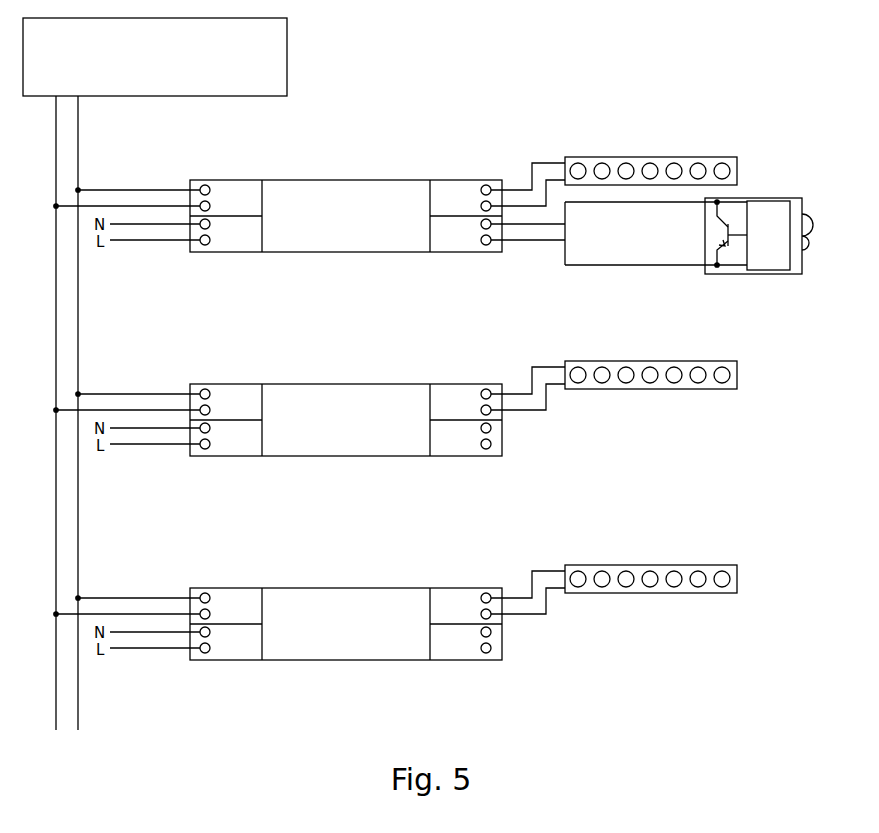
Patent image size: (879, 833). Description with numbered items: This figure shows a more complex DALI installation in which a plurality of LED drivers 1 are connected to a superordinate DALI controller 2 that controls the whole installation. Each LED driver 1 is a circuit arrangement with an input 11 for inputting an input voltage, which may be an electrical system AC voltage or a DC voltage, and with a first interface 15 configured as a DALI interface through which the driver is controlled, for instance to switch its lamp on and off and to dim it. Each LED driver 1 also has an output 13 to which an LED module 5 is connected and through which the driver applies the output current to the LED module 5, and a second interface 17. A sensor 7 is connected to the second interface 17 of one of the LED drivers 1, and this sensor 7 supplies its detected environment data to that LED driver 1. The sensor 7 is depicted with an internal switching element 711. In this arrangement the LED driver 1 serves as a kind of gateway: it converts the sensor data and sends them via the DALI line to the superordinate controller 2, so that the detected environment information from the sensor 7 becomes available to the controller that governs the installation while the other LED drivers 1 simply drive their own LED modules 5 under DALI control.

The LED driver 1 is at (346, 420).
The superordinate DALI controller 2 is at (155, 57).
The LED module 5 is at (736, 164).
The sensor 7 is at (803, 195).
The transistor switching element of the sensor 711 is at (714, 232).
The input 11 is at (223, 436).
The output 13 is at (468, 402).
The first interface 15 is at (223, 402).
The second interface 17 is at (468, 436).